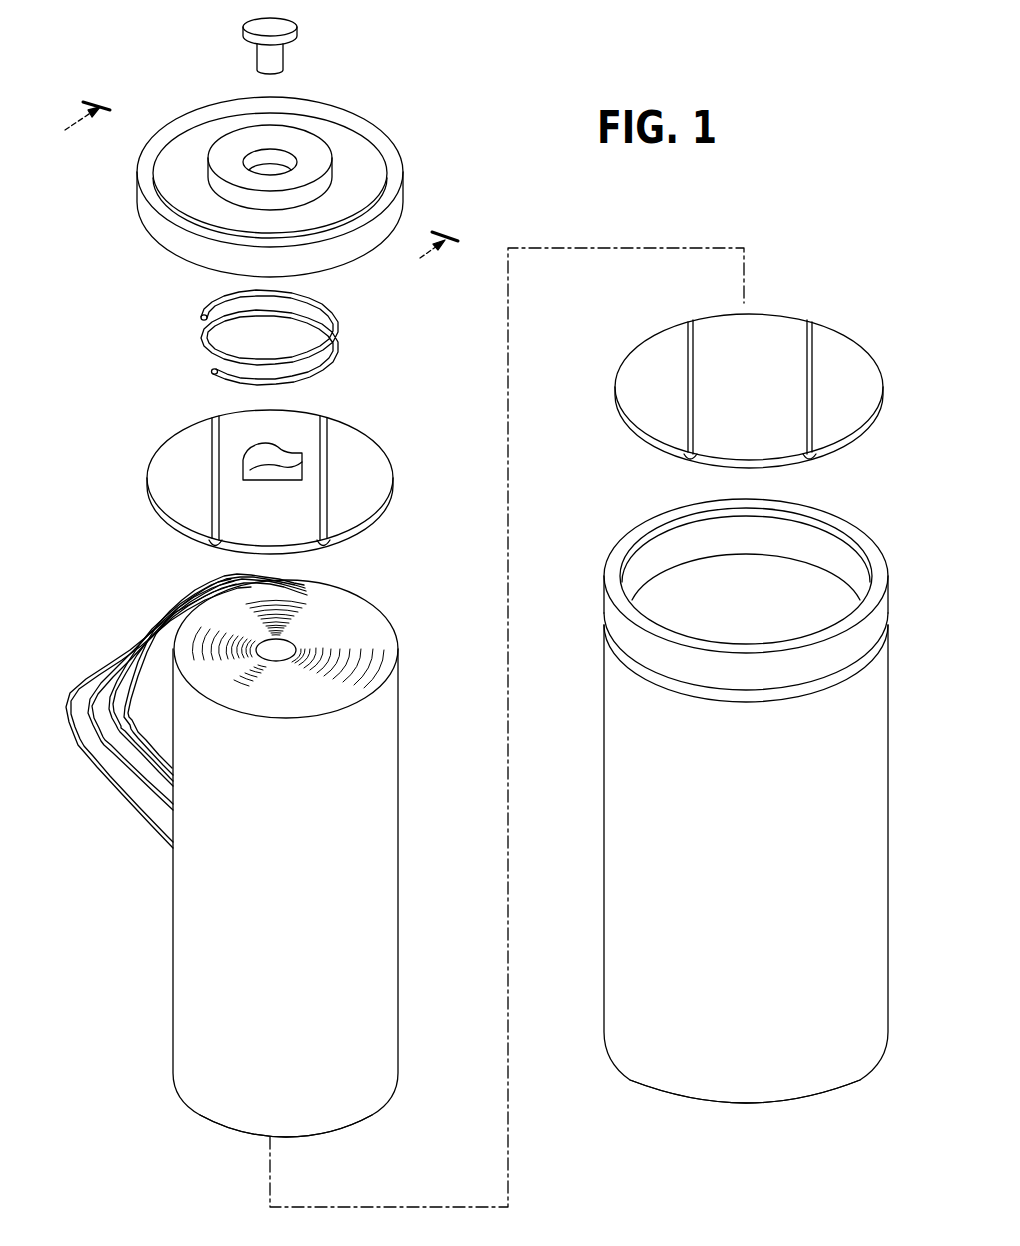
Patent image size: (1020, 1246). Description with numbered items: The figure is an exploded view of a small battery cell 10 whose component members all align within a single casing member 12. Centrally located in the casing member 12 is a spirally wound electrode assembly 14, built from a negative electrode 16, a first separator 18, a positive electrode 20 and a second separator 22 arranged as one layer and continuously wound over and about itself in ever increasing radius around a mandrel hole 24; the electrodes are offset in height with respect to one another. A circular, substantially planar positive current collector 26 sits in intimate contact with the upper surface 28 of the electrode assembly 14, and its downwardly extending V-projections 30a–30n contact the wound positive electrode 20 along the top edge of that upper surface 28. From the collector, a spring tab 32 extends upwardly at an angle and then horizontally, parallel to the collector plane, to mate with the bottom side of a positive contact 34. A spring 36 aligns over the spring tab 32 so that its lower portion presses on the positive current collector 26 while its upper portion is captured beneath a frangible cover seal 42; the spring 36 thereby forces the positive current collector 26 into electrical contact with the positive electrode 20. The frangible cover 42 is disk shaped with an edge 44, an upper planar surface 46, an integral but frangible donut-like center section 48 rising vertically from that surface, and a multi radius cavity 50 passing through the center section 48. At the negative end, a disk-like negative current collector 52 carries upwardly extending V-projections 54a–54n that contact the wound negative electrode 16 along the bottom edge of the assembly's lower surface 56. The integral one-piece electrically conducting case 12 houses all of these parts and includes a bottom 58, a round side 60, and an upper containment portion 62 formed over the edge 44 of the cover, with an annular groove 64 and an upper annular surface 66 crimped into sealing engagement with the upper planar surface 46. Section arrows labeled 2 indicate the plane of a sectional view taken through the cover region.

The small battery cell 10 is at (758, 221).
The casing member 12 is at (714, 834).
The spirally wound electrode assembly 14 is at (258, 874).
The negative electrode 16 is at (108, 664).
The first separator 18 is at (95, 722).
The positive electrode 20 is at (122, 745).
The second separator 22 is at (150, 790).
The mandrel hole 24 is at (282, 655).
The positive current collector 26 is at (302, 485).
The upper surface 28 is at (372, 615).
The V-projection 30a is at (212, 550).
The V-projection 30n is at (330, 550).
The spring tab 32 is at (275, 452).
The positive contact 34 is at (313, 37).
The spring 36 is at (356, 339).
The frangible cover seal 42 is at (317, 195).
The edge 44 is at (193, 255).
The upper planar surface 46 is at (190, 135).
The frangible center section 48 is at (343, 153).
The multi radius cavity 50 is at (290, 160).
The negative current collector 52 is at (712, 362).
The V-projection 54a is at (688, 316).
The V-projection 54n is at (812, 316).
The lower surface 56 is at (350, 1138).
The bottom 58 is at (719, 1110).
The round side 60 is at (724, 893).
The upper containment portion 62 is at (603, 610).
The annular groove 64 is at (700, 700).
The upper annular surface 66 is at (640, 528).
The section line 2- 2 is at (263, 167).